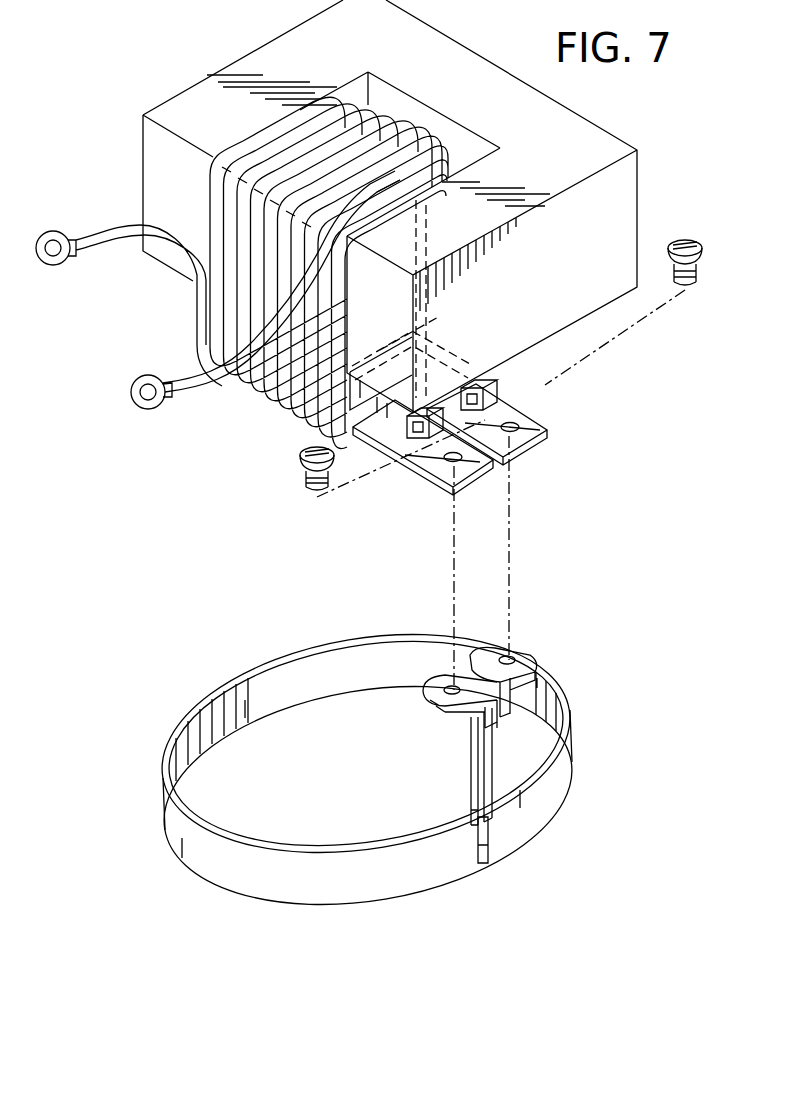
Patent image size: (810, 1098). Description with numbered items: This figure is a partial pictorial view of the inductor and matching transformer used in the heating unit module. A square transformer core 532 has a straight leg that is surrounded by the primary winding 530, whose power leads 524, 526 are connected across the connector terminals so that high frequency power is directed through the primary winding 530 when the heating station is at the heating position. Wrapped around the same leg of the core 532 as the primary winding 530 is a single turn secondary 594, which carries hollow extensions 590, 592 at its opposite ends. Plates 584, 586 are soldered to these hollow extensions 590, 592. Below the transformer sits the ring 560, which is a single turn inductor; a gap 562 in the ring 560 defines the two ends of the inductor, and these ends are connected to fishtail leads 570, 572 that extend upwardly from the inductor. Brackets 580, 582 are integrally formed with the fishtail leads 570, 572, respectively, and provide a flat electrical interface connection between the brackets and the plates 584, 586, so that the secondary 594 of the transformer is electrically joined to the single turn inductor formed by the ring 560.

The primary winding 530 is at (380, 127).
The square transformer core 532 is at (633, 170).
The power lead 526 is at (85, 232).
The power lead 524 is at (180, 405).
The single turn secondary 594 is at (392, 207).
The hollow extension 592 is at (478, 384).
The hollow extension 590 is at (400, 432).
The plate 586 is at (510, 442).
The plate 584 is at (448, 479).
The bracket 582 is at (524, 652).
The bracket 580 is at (425, 695).
The fishtail lead 572 is at (493, 778).
The fishtail lead 570 is at (460, 786).
The ring 560 is at (520, 833).
The gap 562 is at (489, 848).